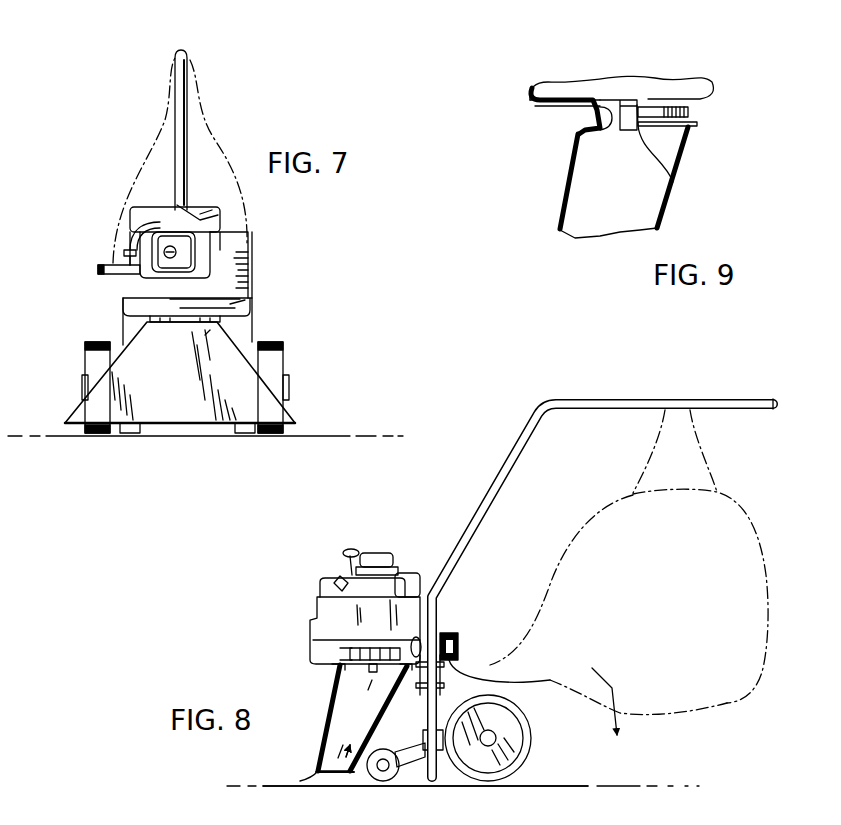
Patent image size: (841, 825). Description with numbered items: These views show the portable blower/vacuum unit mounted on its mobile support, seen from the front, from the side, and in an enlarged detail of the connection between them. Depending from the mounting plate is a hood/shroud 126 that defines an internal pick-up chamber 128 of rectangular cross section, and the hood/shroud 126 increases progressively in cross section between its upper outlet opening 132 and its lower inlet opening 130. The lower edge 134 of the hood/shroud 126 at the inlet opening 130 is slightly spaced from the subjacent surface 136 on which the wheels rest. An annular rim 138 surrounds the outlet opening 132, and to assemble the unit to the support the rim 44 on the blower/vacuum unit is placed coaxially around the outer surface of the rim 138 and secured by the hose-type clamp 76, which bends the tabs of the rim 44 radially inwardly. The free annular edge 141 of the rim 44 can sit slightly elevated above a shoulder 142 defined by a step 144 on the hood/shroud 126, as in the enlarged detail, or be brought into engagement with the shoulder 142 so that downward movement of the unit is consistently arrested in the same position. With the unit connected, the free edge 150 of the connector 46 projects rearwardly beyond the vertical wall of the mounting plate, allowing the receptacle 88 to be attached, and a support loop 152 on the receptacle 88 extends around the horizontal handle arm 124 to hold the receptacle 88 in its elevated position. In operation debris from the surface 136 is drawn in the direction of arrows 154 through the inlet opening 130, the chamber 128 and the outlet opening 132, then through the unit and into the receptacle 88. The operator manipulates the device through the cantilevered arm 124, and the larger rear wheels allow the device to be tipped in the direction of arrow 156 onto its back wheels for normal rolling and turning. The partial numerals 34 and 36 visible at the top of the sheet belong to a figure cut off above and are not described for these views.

In FIG. 8, the horizontal arm 124 is at (757, 398).
In FIG. 7, the hood/shroud 126 is at (238, 375).
In FIG. 9, the hood/shroud 126 is at (683, 157).
In FIG. 8, the hood/shroud 126 is at (330, 713).
In FIG. 7, the pick-up chamber 128 is at (237, 295).
In FIG. 9, the pick-up chamber 128 is at (614, 211).
In FIG. 8, the pick-up chamber 128 is at (380, 711).
In FIG. 7, the lower inlet opening 130 is at (178, 436).
In FIG. 8, the lower inlet opening 130 is at (350, 782).
In FIG. 8, the upper outlet opening 132 is at (366, 660).
In FIG. 8, the lower edge 134 is at (337, 774).
In FIG. 8, the subjacent surface 136 is at (546, 784).
In FIG. 9, the annular rim 138 is at (617, 107).
In FIG. 9, the free annular edge 141 is at (662, 125).
In FIG. 9, the shoulder 142 is at (587, 125).
In FIG. 9, the step 144 is at (590, 133).
In FIG. 8, the free edge 150 is at (460, 638).
In FIG. 8, the support loop 152 is at (657, 429).
In FIG. 8, the arrows 154 is at (316, 779).
In FIG. 8, the arrow 156 is at (608, 692).
In FIG. 9, the rim 44 is at (557, 80).
In FIG. 8, the connector 46 is at (452, 660).
In FIG. 9, the hose-type clamp 76 is at (650, 110).
In FIG. 8, the receptacle 88 is at (676, 582).
In FIG. 9, the partial numeral 34 is at (451, 11).
In FIG. 9, the partial numeral 36 is at (539, 8).